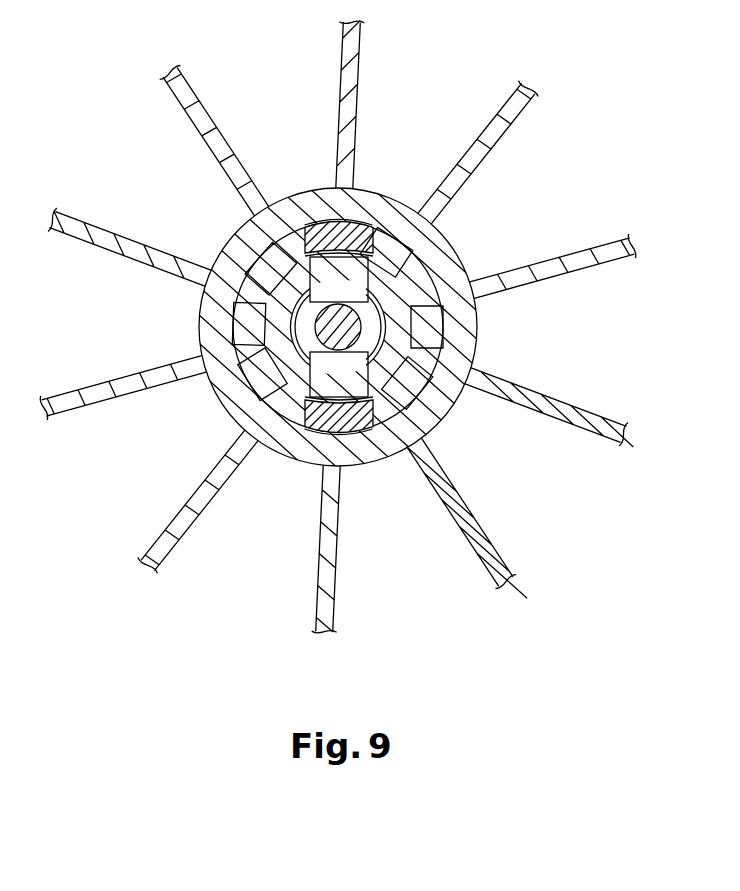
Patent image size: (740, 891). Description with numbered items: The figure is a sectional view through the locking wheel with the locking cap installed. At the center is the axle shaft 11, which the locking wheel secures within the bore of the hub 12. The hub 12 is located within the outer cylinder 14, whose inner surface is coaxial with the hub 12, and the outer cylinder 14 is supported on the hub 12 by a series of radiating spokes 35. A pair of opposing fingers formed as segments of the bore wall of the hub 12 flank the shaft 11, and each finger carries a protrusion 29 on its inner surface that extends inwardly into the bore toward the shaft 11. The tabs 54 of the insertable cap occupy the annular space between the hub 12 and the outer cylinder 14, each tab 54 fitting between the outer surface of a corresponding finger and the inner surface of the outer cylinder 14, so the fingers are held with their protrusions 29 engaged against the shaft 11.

The axle shaft 11 is at (477, 303).
The hub 12 is at (203, 306).
The outer cylinder 14 is at (380, 193).
The protrusion 29 is at (297, 275).
The spokes 35 is at (470, 280).
The tabs 54 is at (325, 232).